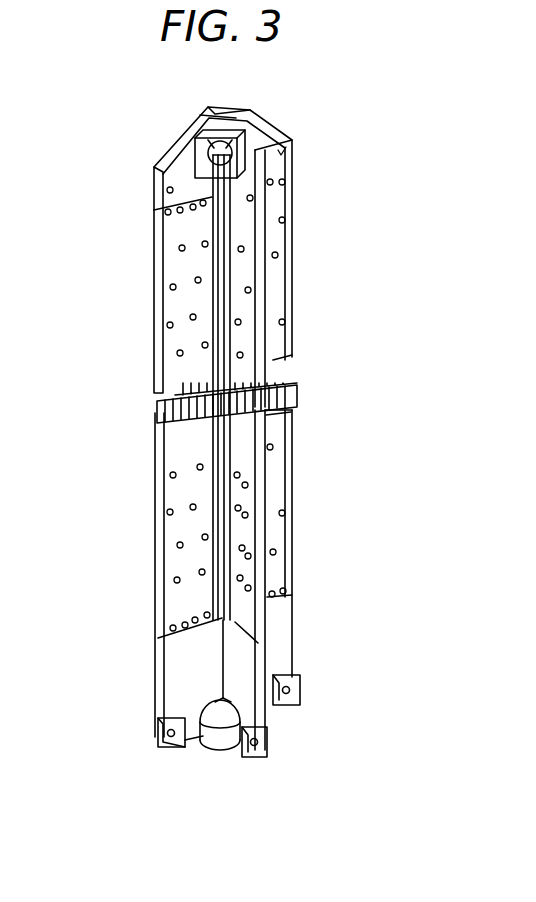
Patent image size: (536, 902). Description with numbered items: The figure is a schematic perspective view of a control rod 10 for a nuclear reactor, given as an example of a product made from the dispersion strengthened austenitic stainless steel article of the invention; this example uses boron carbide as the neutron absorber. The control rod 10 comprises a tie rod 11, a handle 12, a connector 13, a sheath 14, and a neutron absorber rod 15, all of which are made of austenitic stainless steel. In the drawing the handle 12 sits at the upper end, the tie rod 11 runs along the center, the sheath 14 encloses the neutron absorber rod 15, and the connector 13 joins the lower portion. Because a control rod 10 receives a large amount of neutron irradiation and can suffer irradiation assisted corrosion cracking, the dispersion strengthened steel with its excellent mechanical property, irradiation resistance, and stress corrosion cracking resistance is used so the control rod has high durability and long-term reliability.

The control rod 10 is at (335, 157).
The tie rod 11 is at (212, 355).
The handle 12 is at (153, 180).
The connector 13 is at (295, 622).
The sheath 14 is at (295, 490).
The neutron absorber rod 15 is at (295, 390).